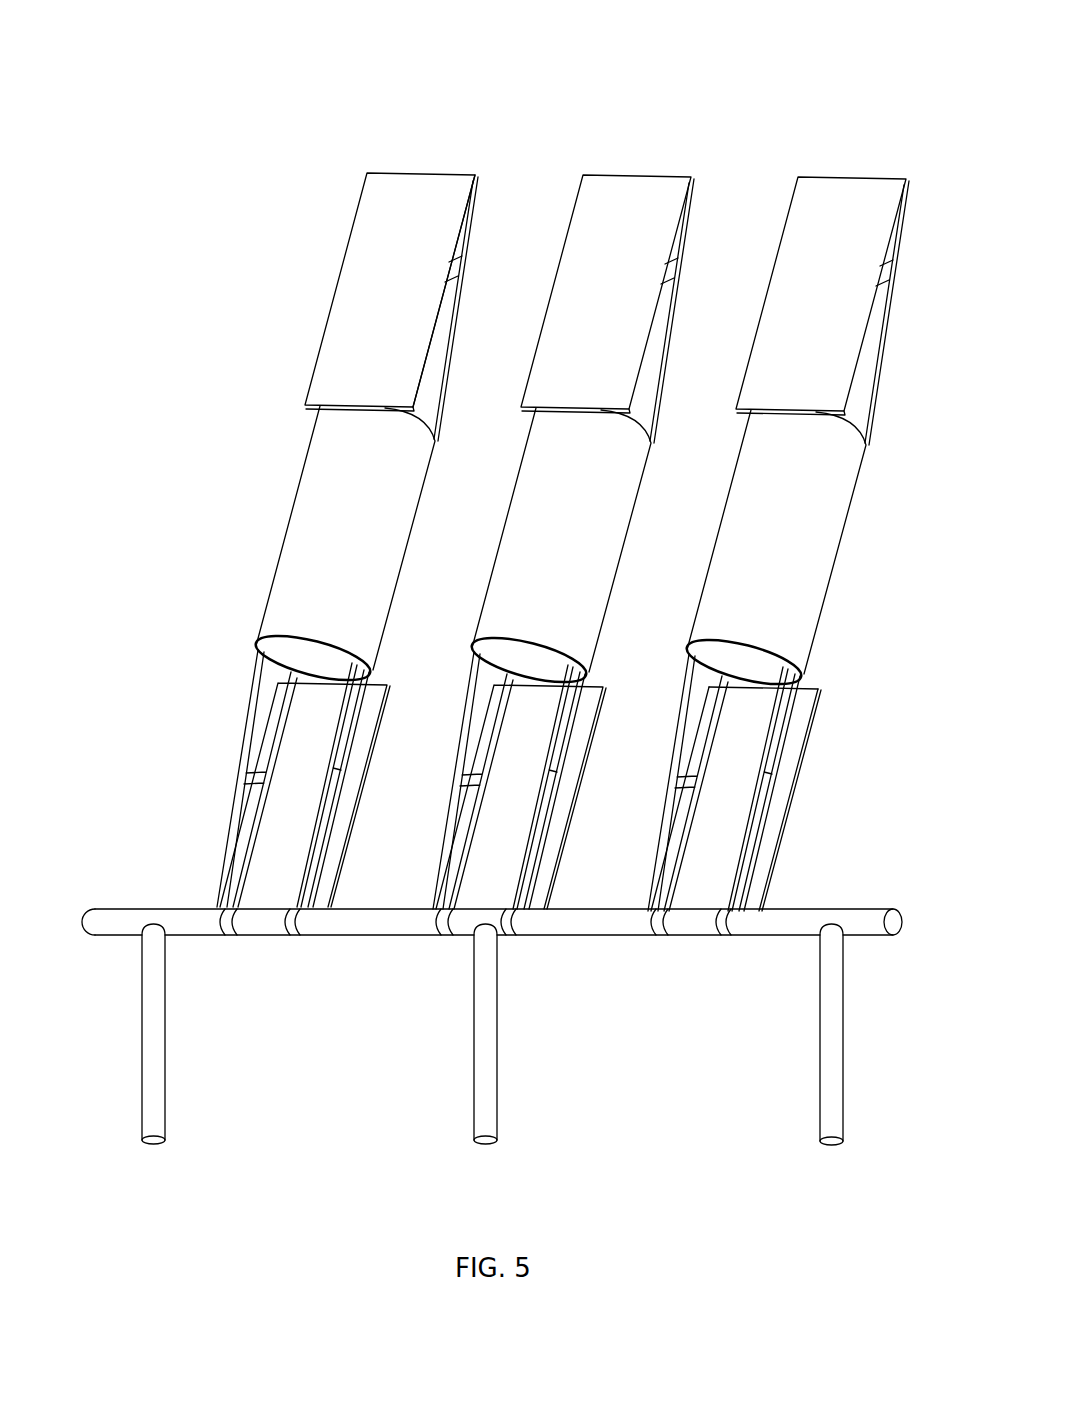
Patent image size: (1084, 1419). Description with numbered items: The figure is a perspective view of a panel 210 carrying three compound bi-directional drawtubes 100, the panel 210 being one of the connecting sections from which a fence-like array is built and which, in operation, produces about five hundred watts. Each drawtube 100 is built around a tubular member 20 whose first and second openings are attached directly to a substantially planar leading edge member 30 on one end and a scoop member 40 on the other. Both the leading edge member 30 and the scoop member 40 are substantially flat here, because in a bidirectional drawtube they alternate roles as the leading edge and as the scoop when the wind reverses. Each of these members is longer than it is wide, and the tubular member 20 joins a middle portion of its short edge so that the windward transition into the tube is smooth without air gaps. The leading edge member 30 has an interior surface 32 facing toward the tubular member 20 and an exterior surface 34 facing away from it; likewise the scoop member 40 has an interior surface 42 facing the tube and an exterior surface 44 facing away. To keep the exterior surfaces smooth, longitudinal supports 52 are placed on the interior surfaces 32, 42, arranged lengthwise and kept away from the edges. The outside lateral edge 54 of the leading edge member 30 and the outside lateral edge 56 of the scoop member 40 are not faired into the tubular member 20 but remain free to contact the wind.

The panel 210 is at (298, 82).
The bi-directional drawtube 100 is at (328, 540).
The tubular member 20 is at (316, 450).
The substantially planar leading edge member 30 is at (385, 292).
The interior surface 32 is at (457, 257).
The exterior surface 34 is at (420, 300).
The outside lateral edge 54 is at (852, 392).
The scoop member 40 is at (784, 782).
The interior surface 42 is at (758, 858).
The exterior surface 44 is at (800, 772).
The outside lateral edge 56 is at (820, 692).
The longitudinal supports 52 is at (263, 806).